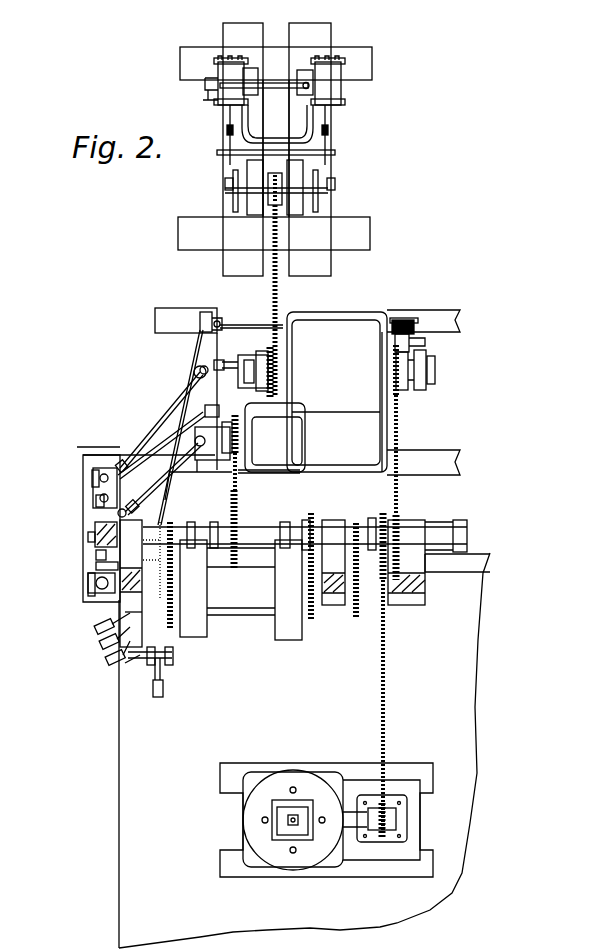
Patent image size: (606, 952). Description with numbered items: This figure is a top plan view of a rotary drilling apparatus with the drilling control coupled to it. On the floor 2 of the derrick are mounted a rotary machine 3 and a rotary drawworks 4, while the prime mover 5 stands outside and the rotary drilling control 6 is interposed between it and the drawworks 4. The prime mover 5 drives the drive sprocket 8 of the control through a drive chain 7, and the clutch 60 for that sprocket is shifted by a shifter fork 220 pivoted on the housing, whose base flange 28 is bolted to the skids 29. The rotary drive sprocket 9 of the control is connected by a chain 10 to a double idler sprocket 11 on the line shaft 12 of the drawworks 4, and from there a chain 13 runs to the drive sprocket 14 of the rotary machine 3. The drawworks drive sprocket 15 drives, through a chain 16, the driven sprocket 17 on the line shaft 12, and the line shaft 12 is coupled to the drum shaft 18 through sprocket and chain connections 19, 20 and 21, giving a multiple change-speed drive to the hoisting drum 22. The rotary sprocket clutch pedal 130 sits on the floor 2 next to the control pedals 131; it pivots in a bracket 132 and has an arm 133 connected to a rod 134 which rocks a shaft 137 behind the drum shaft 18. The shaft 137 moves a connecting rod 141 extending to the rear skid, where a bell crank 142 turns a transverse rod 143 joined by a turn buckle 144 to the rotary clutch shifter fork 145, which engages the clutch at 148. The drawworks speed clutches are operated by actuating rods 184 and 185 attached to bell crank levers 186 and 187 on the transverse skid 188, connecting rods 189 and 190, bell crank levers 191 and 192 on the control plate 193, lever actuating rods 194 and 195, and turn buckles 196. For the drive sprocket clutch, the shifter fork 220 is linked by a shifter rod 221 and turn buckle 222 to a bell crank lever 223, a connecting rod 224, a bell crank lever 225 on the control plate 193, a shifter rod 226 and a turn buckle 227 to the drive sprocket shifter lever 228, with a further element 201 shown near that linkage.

The floor 2 is at (118, 752).
The rotary machine 3 is at (282, 775).
The rotary drawworks 4 is at (427, 560).
The prime mover 5 is at (335, 122).
The rotary drilling control 6 is at (355, 335).
The drive chain 7 is at (280, 293).
The drive sprocket 8 is at (280, 362).
The rotary drive sprocket 9 is at (398, 392).
The chain 10 is at (398, 440).
The double idler sprocket 11 is at (397, 513).
The line shaft 12 is at (266, 531).
The chain 13 is at (386, 663).
The drive sprocket 14 is at (373, 836).
The drawworks drive sprocket 15 is at (271, 438).
The chain 16 is at (238, 483).
The driven sprocket 17 is at (238, 517).
The drum shaft 18 is at (150, 600).
The sprocket and chain connection 19 is at (172, 520).
The sprocket and chain connection 20 is at (362, 560).
The sprocket and chain connection 21 is at (314, 515).
The hoisting drum 22 is at (248, 603).
The base flange 28 is at (383, 425).
The skids 29 is at (437, 310).
The clutch 60 is at (277, 342).
The rotary sprocket clutch pedal 130 is at (158, 697).
The control pedals 131 is at (98, 660).
The bracket 132 is at (168, 662).
The arm 133 is at (130, 663).
The rod 134 is at (120, 612).
The shaft 137 is at (142, 573).
The connecting rod 141 is at (183, 408).
The bell crank 142 is at (205, 312).
The rod 143 is at (252, 324).
The turn buckle 144 is at (410, 320).
The rotary clutch shifter fork 145 is at (428, 338).
The clutch engagement 148 is at (435, 367).
The actuating rod 184 is at (217, 430).
The actuating rod 185 is at (220, 446).
The bell crank lever 186 is at (192, 437).
The bell crank lever 187 is at (185, 450).
The transverse skid 188 is at (203, 345).
The connecting rod 189 is at (160, 440).
The connecting rod 190 is at (168, 473).
The bell crank lever 191 is at (90, 493).
The bell crank lever 192 is at (122, 509).
The control plate 193 is at (85, 480).
The lever actuating rod 194 is at (90, 525).
The lever actuating rod 195 is at (92, 538).
The turn buckles 196 is at (88, 550).
The arm 201 is at (90, 592).
The shifter fork 220 is at (255, 357).
The shifter rod 221 is at (230, 359).
The turn buckle 222 is at (200, 368).
The bell crank lever 223 is at (195, 372).
The connecting rod 224 is at (150, 428).
The bell crank lever 225 is at (103, 463).
The shifter rod 226 is at (92, 502).
The turn buckle 227 is at (92, 565).
The drive sprocket shifter lever 228 is at (90, 582).